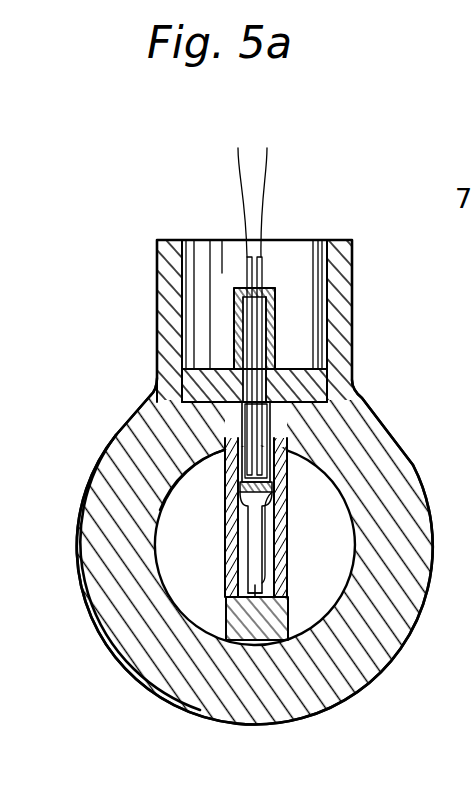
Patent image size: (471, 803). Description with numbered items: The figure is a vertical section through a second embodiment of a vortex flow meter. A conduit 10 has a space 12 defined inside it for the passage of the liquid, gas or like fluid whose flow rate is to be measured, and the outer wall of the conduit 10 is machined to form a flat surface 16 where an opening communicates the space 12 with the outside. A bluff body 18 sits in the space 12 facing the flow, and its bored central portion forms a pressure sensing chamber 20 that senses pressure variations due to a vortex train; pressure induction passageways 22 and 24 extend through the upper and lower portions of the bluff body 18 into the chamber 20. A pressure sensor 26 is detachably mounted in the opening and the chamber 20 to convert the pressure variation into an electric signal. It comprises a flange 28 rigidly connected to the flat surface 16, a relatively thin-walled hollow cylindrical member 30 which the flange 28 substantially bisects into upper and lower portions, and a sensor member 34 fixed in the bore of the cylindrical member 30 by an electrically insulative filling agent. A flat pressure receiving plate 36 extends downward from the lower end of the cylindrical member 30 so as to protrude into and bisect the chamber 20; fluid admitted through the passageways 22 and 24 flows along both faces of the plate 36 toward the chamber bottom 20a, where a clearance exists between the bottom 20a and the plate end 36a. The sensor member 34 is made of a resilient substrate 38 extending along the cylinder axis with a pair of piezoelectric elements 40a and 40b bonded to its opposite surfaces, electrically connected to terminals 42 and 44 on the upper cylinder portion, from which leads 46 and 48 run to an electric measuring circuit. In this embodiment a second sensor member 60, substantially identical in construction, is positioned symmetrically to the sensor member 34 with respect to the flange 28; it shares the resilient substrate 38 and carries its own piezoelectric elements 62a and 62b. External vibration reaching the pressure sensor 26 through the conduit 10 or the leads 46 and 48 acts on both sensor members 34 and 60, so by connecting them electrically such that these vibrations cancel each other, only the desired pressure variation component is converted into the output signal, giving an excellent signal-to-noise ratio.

The conduit 10 is at (132, 628).
The space 12 is at (338, 562).
The flat surface 16 is at (197, 417).
The bluff body 18 is at (203, 543).
The pressure sensing chamber 20 is at (270, 518).
The chamber bottom 20a is at (262, 610).
The pressure induction passageway 22 is at (173, 452).
The pressure induction passageway 24 is at (226, 598).
The pressure sensor 26 is at (340, 373).
The flange 28 is at (221, 391).
The hollow cylindrical member 30 is at (287, 357).
The sensor member 34 is at (417, 465).
The pressure receiving plate 36 is at (263, 544).
The plate end 36a is at (268, 592).
The resilient substrate 38 is at (277, 340).
The piezoelectric element 40a is at (242, 469).
The piezoelectric element 40b is at (285, 430).
The terminal 42 is at (262, 268).
The terminal 44 is at (222, 262).
The lead 46 is at (270, 167).
The lead 48 is at (237, 158).
The second sensor member 60 is at (283, 315).
The piezoelectric element 62a is at (243, 300).
The piezoelectric element 62b is at (275, 302).